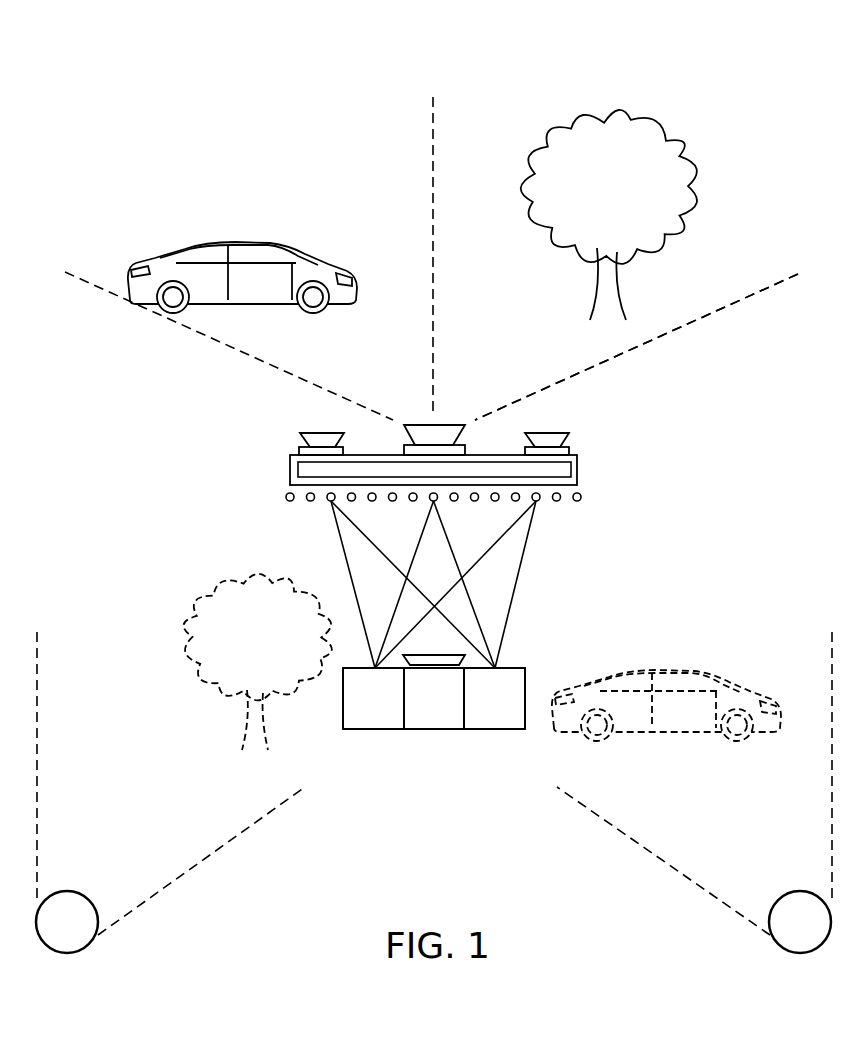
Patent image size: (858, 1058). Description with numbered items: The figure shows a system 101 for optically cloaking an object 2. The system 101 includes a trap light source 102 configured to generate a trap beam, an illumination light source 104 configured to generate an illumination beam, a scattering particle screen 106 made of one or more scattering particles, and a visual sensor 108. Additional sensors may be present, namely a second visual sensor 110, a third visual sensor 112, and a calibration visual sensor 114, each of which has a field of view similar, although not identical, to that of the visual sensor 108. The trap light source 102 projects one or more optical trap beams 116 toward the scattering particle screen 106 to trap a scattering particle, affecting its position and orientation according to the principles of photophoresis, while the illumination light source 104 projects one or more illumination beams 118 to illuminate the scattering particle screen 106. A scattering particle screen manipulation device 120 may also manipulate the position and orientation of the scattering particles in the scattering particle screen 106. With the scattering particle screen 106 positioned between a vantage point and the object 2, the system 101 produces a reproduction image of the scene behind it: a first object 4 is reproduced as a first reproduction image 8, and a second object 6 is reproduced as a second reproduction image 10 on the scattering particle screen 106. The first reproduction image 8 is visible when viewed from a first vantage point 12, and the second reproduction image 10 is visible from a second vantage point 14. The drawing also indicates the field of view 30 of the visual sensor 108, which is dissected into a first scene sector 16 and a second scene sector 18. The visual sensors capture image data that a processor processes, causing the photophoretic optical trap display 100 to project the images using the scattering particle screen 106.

The object 2 is at (577, 470).
The first object 4 is at (686, 186).
The second object 6 is at (226, 246).
The first reproduction image 8 is at (202, 622).
The second reproduction image 10 is at (660, 672).
The first vantage point 12 is at (68, 892).
The second vantage point 14 is at (800, 892).
The first scene sector 16 is at (750, 120).
The second scene sector 18 is at (117, 120).
The field of view 30 is at (733, 308).
The photophoretic optical trap display 100 is at (532, 662).
The system 101 is at (100, 415).
The trap light source 102 is at (372, 729).
The illumination light source 104 is at (493, 730).
The scattering particle screen 106 is at (270, 497).
The visual sensor 108 is at (407, 425).
The second visual sensor 110 is at (298, 452).
The third visual sensor 112 is at (570, 450).
The calibration visual sensor 114 is at (437, 730).
The optical trap beams 116 is at (338, 528).
The illumination beams 118 is at (528, 528).
The scattering particle screen manipulation device 120 is at (298, 470).